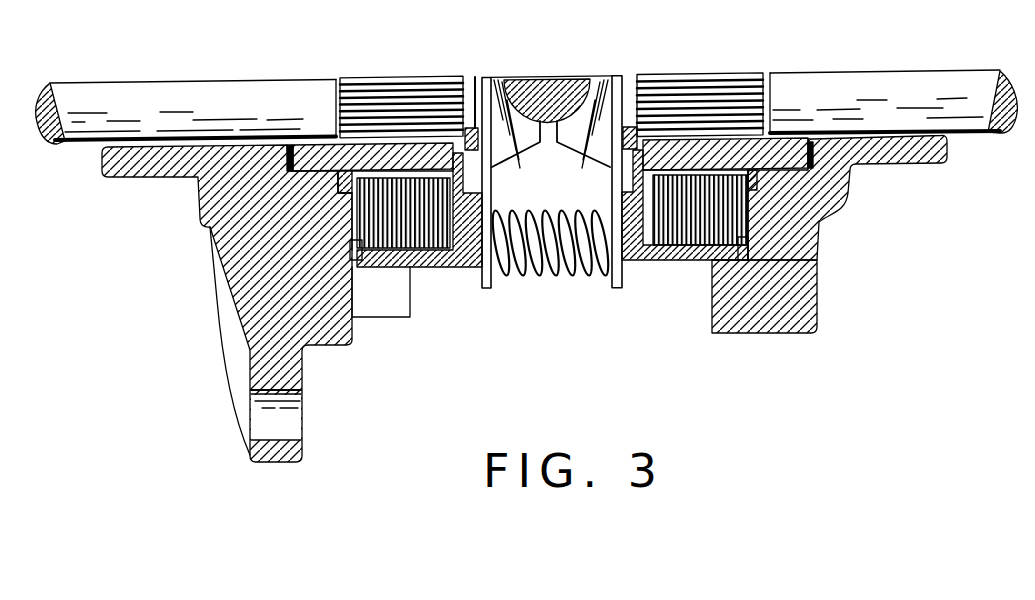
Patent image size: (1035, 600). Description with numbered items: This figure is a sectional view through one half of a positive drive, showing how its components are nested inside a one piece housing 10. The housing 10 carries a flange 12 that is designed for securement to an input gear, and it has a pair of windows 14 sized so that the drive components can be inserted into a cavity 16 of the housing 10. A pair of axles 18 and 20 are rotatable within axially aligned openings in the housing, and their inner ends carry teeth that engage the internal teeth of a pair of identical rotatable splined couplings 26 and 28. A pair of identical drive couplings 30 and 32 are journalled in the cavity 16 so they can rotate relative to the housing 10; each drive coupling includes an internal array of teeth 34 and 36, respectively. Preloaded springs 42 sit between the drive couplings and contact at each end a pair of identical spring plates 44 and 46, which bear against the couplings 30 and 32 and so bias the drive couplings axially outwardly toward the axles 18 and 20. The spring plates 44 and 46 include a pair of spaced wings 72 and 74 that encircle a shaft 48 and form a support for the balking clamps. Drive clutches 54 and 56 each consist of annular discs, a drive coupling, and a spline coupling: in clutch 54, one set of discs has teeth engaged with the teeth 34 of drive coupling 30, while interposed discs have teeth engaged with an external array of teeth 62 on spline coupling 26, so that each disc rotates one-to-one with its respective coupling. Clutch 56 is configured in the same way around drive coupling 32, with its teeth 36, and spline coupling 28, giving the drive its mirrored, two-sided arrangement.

The housing 10 is at (790, 302).
The flange 12 is at (297, 453).
The windows 14 is at (710, 310).
The cavity 16 is at (752, 261).
The axle 18 is at (197, 102).
The axle 20 is at (852, 100).
The splined coupling 26 is at (300, 166).
The splined coupling 28 is at (753, 150).
The drive coupling 30 is at (467, 250).
The drive coupling 32 is at (650, 263).
The internal array of teeth 34 is at (363, 243).
The internal array of teeth 36 is at (743, 237).
The preloaded springs 42 is at (551, 280).
The spring plate 44 is at (487, 290).
The spring plate 46 is at (618, 290).
The shaft 48 is at (540, 97).
The drive clutch 54 is at (328, 221).
The drive clutch 56 is at (760, 212).
The external array of teeth 62 is at (340, 180).
The wing 72 is at (517, 148).
The wing 74 is at (597, 148).